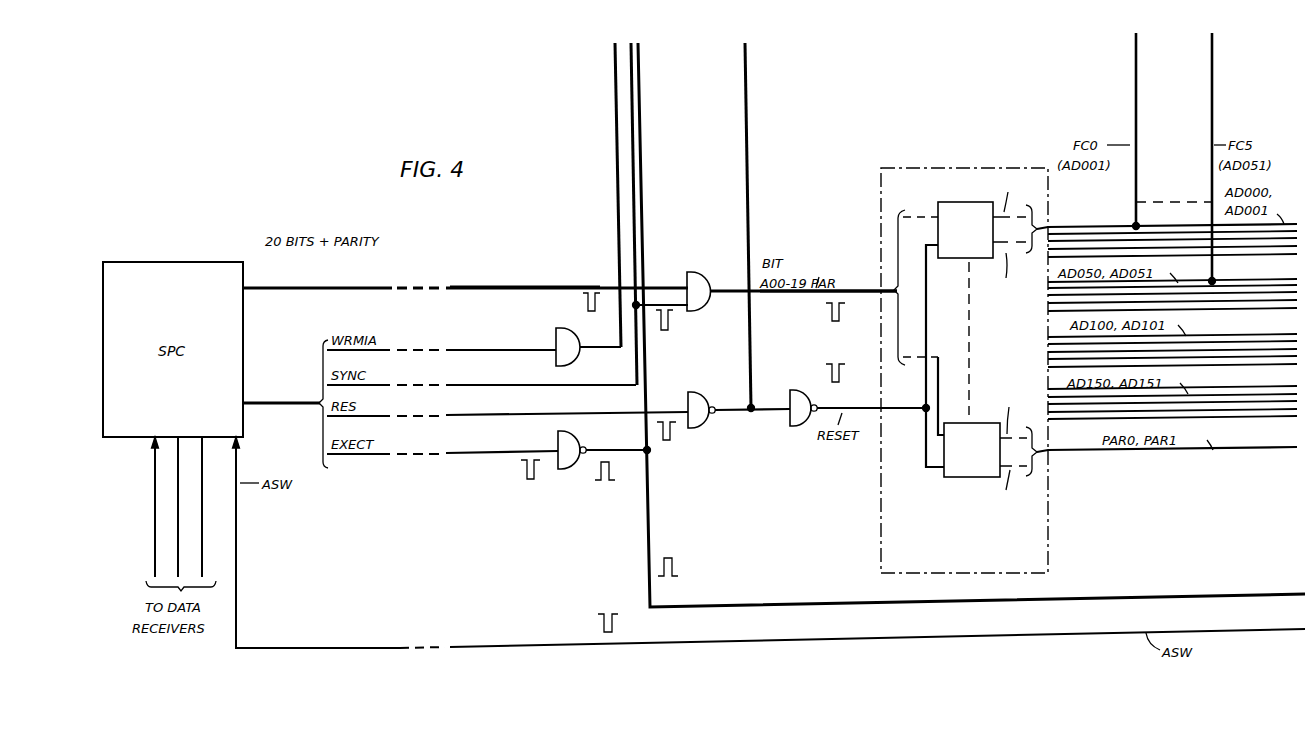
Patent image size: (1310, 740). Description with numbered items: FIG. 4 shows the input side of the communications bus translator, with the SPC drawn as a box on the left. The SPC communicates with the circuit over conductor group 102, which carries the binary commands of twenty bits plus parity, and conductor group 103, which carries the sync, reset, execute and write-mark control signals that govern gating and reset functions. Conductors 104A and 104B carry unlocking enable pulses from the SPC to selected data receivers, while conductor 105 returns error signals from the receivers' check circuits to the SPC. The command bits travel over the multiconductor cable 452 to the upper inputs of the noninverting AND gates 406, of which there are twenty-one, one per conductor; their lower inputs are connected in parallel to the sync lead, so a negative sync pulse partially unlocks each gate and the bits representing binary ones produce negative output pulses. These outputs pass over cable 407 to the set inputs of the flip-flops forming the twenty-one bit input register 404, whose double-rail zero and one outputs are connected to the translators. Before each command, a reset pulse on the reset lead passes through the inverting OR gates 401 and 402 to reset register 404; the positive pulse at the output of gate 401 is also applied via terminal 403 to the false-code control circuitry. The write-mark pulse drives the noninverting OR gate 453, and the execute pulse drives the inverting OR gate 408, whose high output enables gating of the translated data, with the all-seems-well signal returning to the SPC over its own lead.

The conductor group 102 is at (261, 288).
The conductor group 103 is at (272, 398).
The conductor 104A is at (202, 545).
The conductor 104B is at (178, 515).
The conductor 105 is at (155, 483).
The multiconductor cable 452 is at (486, 287).
The noninverting OR gate 453 is at (570, 327).
The noninverting AND gate 406 is at (703, 309).
The cable 407 is at (864, 283).
The inverting OR gate 401 is at (700, 430).
The inverting OR gate 402 is at (798, 428).
The terminal 403 is at (756, 418).
The inverting OR gate 408 is at (572, 472).
The 21-bit input register 404 is at (881, 517).